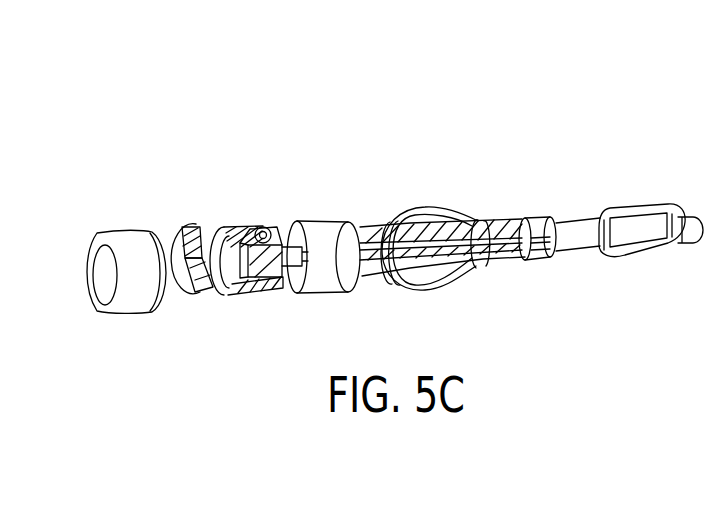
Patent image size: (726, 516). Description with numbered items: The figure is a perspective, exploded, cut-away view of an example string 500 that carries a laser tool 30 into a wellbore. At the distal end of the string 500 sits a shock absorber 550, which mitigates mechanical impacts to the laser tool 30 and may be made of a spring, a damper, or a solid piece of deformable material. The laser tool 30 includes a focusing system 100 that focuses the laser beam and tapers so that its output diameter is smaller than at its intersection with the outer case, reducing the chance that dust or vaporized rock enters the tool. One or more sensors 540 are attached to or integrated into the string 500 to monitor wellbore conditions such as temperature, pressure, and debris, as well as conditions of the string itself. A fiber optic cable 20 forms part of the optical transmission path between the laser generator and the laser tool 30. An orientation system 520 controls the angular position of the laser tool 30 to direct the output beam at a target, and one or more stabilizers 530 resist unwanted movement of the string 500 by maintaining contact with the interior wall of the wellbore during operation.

The string 500 is at (146, 107).
The shock absorber 550 is at (127, 232).
The laser tool 30 is at (255, 294).
The focusing system 100 is at (266, 222).
The sensors 540 is at (325, 226).
The fiber optic cable 20 is at (443, 238).
The orientation system 520 is at (540, 259).
The stabilizers 530 is at (635, 256).